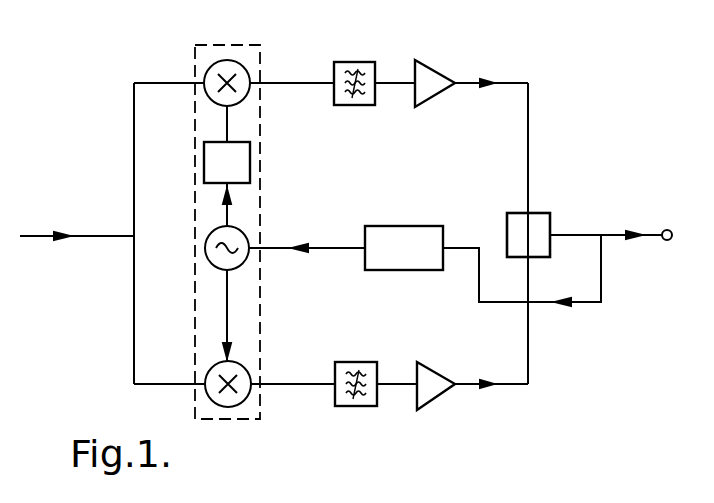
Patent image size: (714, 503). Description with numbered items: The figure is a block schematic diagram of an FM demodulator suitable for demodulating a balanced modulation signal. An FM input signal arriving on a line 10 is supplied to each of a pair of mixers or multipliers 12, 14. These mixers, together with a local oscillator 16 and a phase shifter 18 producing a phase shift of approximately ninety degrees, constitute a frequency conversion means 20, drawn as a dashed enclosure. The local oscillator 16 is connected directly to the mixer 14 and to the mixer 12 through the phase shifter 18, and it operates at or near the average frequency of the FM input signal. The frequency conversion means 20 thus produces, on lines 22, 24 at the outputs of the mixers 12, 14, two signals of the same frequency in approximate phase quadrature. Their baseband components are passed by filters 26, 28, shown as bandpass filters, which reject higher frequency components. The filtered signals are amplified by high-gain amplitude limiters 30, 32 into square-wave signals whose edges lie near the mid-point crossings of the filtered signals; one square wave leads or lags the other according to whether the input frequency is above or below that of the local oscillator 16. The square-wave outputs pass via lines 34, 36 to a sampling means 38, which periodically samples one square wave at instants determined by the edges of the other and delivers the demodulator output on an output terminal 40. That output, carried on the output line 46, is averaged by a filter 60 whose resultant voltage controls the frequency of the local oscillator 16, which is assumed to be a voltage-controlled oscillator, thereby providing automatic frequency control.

The line 10 is at (82, 236).
The mixer 12 is at (208, 66).
The mixer 14 is at (245, 398).
The local oscillator 16 is at (246, 234).
The phase shifter 18 is at (250, 157).
The frequency conversion means 20 is at (262, 46).
The line 22 is at (298, 85).
The line 24 is at (310, 383).
The filter 26 is at (364, 62).
The filter 28 is at (360, 407).
The amplitude limiter 30 is at (444, 68).
The amplitude limiter 32 is at (435, 400).
The line 34 is at (528, 150).
The line 36 is at (528, 345).
The sampling means 38 is at (540, 213).
The output terminal 40 is at (662, 230).
The output line 46 is at (592, 235).
The filter 60 is at (430, 225).